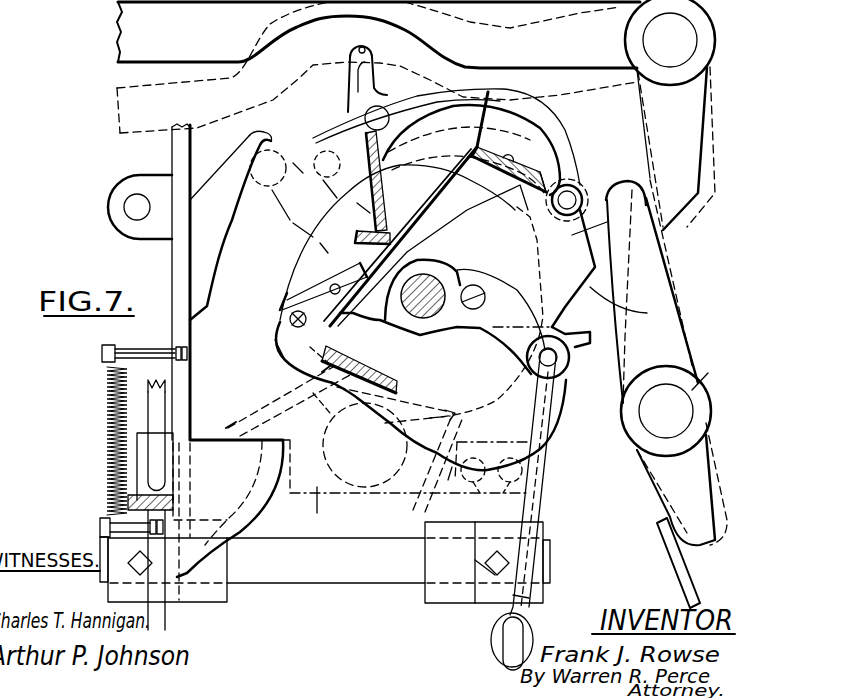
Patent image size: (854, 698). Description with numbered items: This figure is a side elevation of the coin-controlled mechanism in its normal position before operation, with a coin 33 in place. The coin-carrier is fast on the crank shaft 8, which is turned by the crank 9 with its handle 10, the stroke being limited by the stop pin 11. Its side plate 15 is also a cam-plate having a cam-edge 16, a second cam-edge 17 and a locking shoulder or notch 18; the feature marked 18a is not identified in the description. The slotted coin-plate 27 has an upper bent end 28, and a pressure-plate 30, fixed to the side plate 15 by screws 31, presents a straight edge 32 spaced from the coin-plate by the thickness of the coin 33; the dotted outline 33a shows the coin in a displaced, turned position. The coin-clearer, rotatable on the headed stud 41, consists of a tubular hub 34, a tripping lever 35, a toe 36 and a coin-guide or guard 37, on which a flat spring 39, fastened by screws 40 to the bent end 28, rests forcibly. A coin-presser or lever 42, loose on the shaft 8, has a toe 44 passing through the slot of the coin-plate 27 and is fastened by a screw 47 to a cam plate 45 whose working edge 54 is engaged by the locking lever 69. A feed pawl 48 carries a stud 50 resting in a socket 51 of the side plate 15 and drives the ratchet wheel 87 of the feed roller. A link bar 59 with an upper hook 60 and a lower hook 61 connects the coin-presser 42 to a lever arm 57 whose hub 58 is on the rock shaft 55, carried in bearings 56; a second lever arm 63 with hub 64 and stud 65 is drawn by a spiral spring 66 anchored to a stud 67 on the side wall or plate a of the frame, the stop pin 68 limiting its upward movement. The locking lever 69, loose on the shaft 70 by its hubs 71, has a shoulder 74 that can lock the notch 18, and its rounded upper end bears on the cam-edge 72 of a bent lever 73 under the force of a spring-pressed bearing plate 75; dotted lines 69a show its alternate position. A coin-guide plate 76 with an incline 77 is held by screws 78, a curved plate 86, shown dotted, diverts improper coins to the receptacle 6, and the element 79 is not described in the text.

The side wall or plate of the frame a is at (172, 266).
The receptacle 6 is at (258, 513).
The crank shaft 8 is at (426, 318).
The crank or lever 9 is at (282, 208).
The handle 10 is at (268, 180).
The stop pin 11 is at (325, 163).
The side plate of the coin-carrier 15 is at (450, 467).
The cam-edge 16 is at (273, 342).
The second cam-edge 17 is at (539, 463).
The locking shoulder or notch 18 is at (584, 343).
The arm edge 18a is at (647, 313).
The coin-plate 27 is at (440, 200).
The upper bent end of the coin-plate 28 is at (548, 170).
The pressure-plate 30 is at (297, 272).
The screws 31 is at (293, 318).
The straight edge 32 is at (320, 300).
The coin 33 is at (297, 367).
The coin in dotted position 33a is at (257, 410).
The tubular hub 34 is at (349, 113).
The tripping lever 35 is at (359, 49).
The toe 36 is at (492, 110).
The coin-guide or guard 37 is at (366, 200).
The flat spring 39 is at (320, 137).
The screws 40 is at (525, 160).
The headed stud or pin 41 is at (380, 108).
The coin-presser or lever 42 is at (507, 350).
The toe 44 is at (360, 317).
The cam plate 45 is at (467, 330).
The screw 47 is at (478, 288).
The feed pawl 48 is at (571, 186).
The stud 50 is at (580, 190).
The socket 51 is at (605, 195).
The working edge of the cam plate 54 is at (585, 283).
The rock shaft 55 is at (327, 580).
The bearings 56 is at (217, 597).
The lever arm 57 is at (515, 596).
The tubular hub 58 is at (482, 573).
The link bar 59 is at (543, 507).
The hook 60 is at (555, 368).
The hook 61 is at (492, 636).
The lever arm 63 is at (100, 540).
The tubular hub 64 is at (168, 603).
The stud 65 is at (100, 525).
The spiral spring 66 is at (108, 453).
The stud 67 is at (152, 353).
The stop pin / fixed cam-plate 68 is at (219, 237).
The locking lever 69 is at (663, 267).
The locking lever in dotted position 69a is at (650, 288).
The shaft 70 is at (670, 413).
The hubs 71 is at (708, 373).
The cam-edge 72 is at (648, 178).
The bent lever 73 is at (670, 115).
The shoulder 74 is at (605, 223).
The spring-pressed bearing plate 75 is at (660, 528).
The coin-guide plate or partition 76 is at (410, 488).
The incline 77 is at (423, 497).
The screws 78 is at (477, 483).
The lug 79 is at (106, 207).
The curved plate 86 is at (215, 443).
The ratchet wheel 87 is at (313, 240).